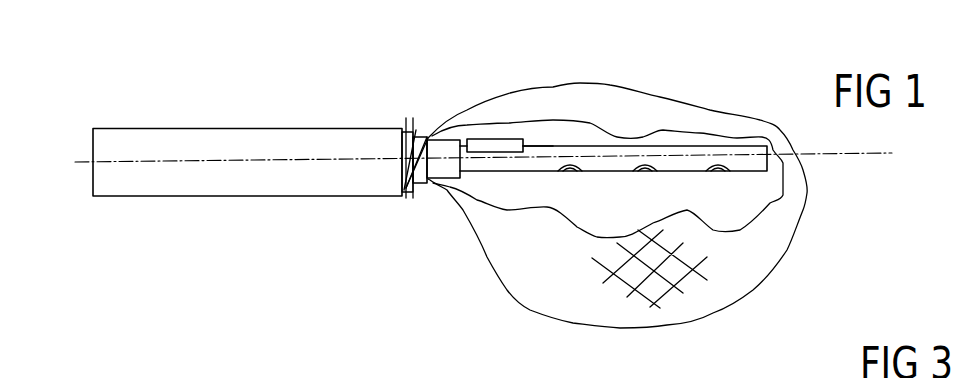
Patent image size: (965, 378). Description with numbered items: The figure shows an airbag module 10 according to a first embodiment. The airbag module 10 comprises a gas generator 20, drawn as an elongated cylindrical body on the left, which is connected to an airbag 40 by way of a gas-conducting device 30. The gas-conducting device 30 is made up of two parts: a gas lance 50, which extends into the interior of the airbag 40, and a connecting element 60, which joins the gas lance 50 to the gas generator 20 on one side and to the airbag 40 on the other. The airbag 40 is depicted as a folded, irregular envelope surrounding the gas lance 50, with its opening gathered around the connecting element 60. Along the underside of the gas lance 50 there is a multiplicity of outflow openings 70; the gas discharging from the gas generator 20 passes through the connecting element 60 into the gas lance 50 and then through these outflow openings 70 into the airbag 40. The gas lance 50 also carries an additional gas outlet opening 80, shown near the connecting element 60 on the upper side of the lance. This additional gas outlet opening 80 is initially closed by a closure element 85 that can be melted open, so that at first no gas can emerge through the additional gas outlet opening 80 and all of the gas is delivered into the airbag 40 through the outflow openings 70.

The airbag module 10 is at (340, 98).
The gas generator 20 is at (172, 173).
The gas-conducting device 30 is at (553, 147).
The airbag 40 is at (600, 302).
The gas lance 50 is at (690, 150).
The connecting element 60 is at (407, 195).
The outflow openings 70 is at (712, 173).
The additional gas outlet opening 80 is at (493, 145).
The closure element 85 is at (508, 140).